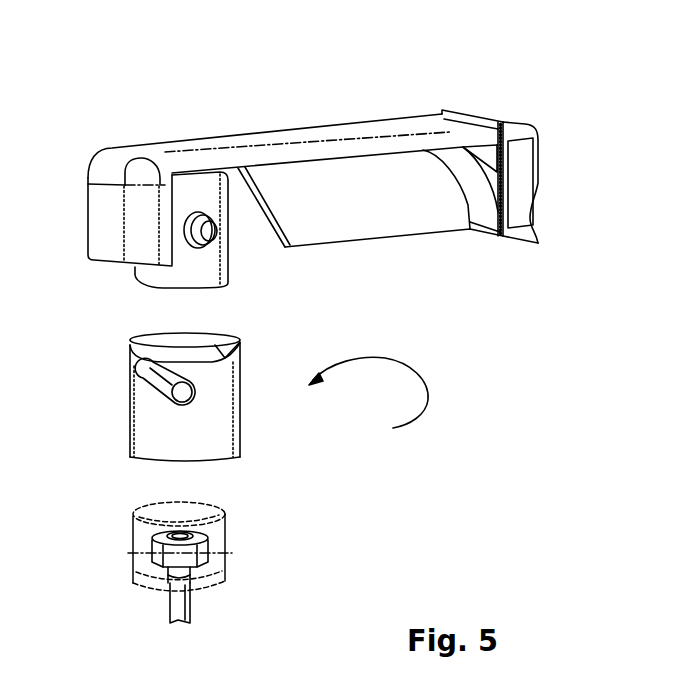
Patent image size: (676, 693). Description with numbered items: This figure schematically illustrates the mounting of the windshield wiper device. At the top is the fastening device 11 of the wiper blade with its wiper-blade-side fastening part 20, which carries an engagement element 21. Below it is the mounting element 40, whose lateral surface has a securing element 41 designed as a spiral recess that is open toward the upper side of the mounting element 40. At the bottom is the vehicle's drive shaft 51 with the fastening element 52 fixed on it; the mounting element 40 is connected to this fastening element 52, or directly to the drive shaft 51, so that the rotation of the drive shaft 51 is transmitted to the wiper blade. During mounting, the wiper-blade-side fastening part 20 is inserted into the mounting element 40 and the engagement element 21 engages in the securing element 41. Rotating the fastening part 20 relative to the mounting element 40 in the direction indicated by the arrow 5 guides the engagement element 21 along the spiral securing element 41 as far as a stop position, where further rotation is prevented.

The arrow 5 is at (392, 356).
The fastening device 11 is at (320, 136).
The wiper-blade-side fastening part 20 is at (160, 277).
The engagement element 21 is at (212, 231).
The mounting element 40 is at (143, 437).
The securing element 41 is at (138, 373).
The drive shaft 51 is at (191, 615).
The fastening element 52 is at (208, 531).